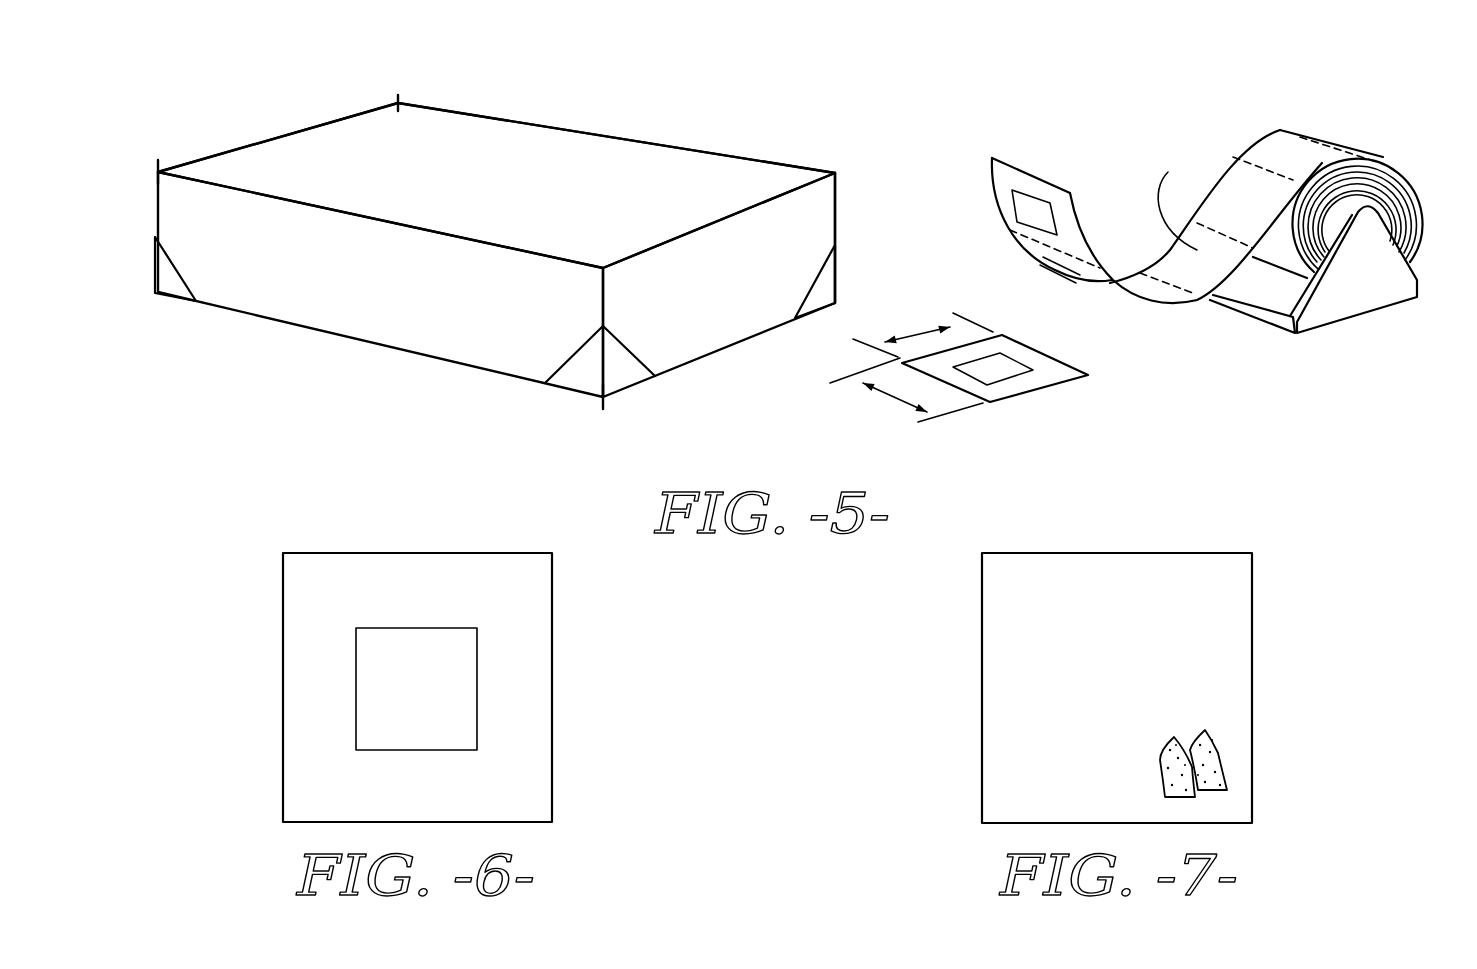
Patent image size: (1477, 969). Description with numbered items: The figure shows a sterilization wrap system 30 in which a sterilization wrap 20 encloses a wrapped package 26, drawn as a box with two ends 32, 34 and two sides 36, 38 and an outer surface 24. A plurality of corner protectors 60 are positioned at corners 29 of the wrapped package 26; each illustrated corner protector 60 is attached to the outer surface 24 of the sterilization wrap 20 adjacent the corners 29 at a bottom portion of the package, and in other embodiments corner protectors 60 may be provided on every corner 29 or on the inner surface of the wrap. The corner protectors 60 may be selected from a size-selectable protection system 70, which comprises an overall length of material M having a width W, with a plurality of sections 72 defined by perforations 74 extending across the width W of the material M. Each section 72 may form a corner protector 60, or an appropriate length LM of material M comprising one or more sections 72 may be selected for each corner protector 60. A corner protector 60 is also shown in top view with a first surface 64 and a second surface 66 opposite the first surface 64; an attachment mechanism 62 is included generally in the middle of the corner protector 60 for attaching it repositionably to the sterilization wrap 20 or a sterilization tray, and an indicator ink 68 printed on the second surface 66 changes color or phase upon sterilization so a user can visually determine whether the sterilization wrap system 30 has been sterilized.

In FIG. 5, the sterilization wrap 20 is at (547, 150).
In FIG. 5, the outer surface 24 is at (473, 137).
In FIG. 5, the wrapped package 26 is at (720, 180).
In FIG. 5, the corners 29 is at (398, 102).
In FIG. 5, the sterilization wrap system 30 is at (207, 106).
In FIG. 5, the end 32 is at (852, 198).
In FIG. 5, the end 34 is at (317, 108).
In FIG. 5, the side 36 is at (307, 337).
In FIG. 5, the side 38 is at (678, 137).
In FIG. 5, the corner protector 60 is at (165, 278).
In FIG. 6, the corner protector 60 is at (225, 572).
In FIG. 7, the corner protector 60 is at (1225, 512).
In FIG. 5, the attachment mechanism 62 is at (1030, 203).
In FIG. 6, the attachment mechanism 62 is at (450, 682).
In FIG. 6, the first surface 64 is at (388, 592).
In FIG. 7, the second surface 66 is at (1107, 585).
In FIG. 7, the indicator ink 68 is at (1223, 758).
In FIG. 5, the size-selectable protection system 70 is at (1367, 123).
In FIG. 5, the sections 72 is at (1207, 207).
In FIG. 5, the perforations 74 is at (1258, 163).
In FIG. 5, the material M is at (1403, 178).
In FIG. 5, the length of material LM is at (887, 340).
In FIG. 5, the width W is at (875, 384).